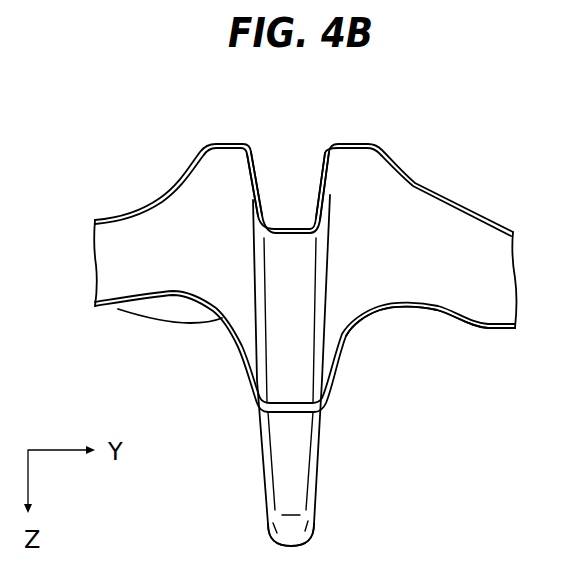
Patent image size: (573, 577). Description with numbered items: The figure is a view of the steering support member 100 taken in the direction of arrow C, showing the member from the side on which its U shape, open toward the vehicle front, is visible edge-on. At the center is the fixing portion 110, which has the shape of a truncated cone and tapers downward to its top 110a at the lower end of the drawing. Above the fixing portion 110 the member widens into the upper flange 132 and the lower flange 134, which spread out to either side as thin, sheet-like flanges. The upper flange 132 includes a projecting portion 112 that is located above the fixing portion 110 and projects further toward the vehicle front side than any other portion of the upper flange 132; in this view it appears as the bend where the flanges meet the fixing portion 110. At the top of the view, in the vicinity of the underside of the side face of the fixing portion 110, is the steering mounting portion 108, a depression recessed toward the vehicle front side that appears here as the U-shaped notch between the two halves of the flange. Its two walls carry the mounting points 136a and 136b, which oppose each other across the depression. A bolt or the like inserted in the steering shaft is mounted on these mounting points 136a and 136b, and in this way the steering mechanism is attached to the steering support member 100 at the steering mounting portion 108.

The steering support member 100 is at (416, 139).
The steering mounting portion 108 is at (289, 229).
The fixing portion 110 is at (327, 448).
The top 110a is at (293, 531).
The projecting portion 112 is at (292, 405).
The upper flange 132 is at (430, 310).
The lower flange 134 is at (170, 324).
The mounting point 136a is at (322, 196).
The mounting point 136b is at (254, 199).